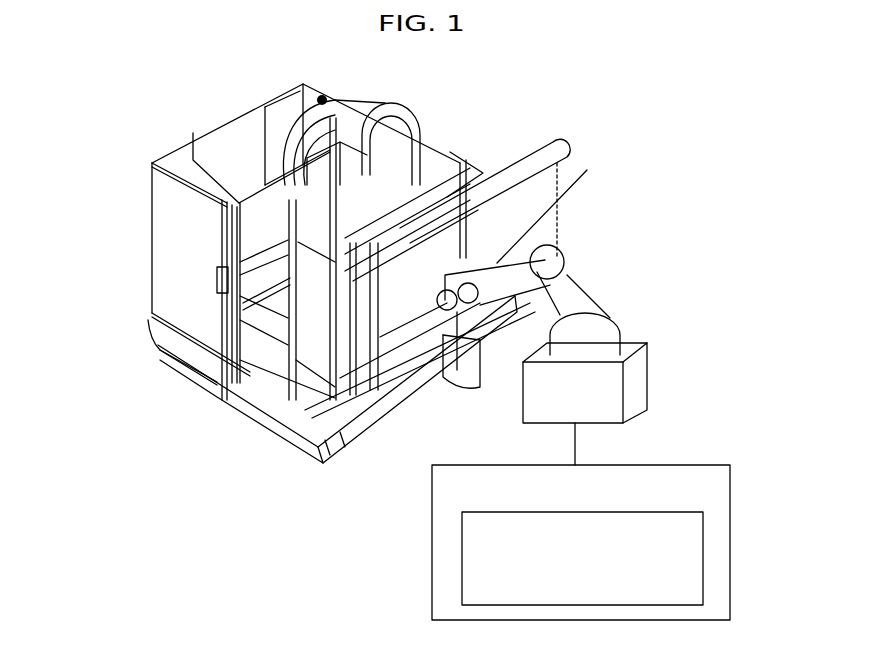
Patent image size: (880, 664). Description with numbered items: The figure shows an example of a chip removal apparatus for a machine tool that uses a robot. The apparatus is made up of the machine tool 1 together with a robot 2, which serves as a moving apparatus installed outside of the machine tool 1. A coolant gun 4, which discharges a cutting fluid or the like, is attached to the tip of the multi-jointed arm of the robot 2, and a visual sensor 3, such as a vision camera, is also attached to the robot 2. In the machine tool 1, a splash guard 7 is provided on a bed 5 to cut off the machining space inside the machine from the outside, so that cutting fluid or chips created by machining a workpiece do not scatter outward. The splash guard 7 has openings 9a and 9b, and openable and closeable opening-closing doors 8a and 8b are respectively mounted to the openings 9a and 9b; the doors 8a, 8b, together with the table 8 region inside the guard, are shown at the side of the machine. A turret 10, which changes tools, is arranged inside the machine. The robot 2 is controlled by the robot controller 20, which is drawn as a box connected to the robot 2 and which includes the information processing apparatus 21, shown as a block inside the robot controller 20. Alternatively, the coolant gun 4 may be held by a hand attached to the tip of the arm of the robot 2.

The machine tool 1 is at (125, 63).
The robot 2 is at (577, 270).
The visual sensor 3 is at (590, 152).
The coolant gun 4 is at (440, 383).
The bed 5 is at (263, 427).
The splash guard 7 is at (180, 193).
The table 8 is at (250, 308).
The opening-closing door 8a is at (217, 383).
The opening-closing door 8b is at (497, 165).
The opening 9a is at (252, 233).
The opening 9b is at (462, 157).
The turret 10 is at (273, 190).
The robot controller 20 is at (732, 520).
The information processing apparatus 21 is at (705, 573).